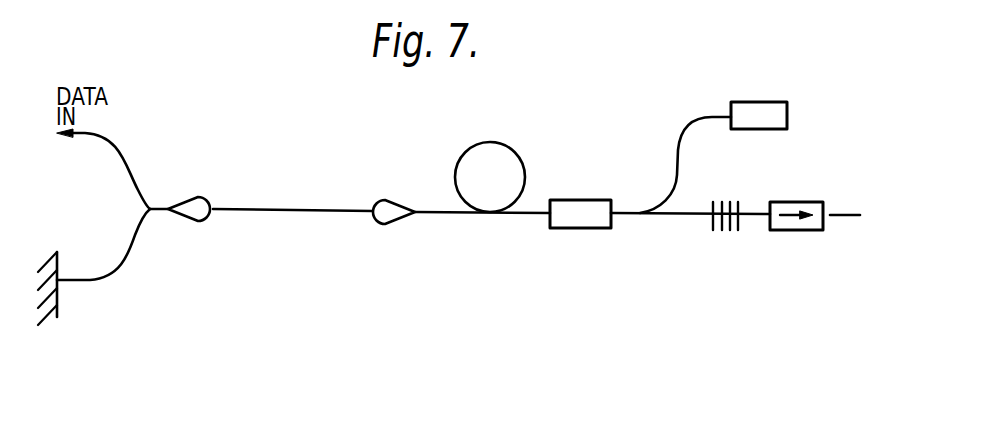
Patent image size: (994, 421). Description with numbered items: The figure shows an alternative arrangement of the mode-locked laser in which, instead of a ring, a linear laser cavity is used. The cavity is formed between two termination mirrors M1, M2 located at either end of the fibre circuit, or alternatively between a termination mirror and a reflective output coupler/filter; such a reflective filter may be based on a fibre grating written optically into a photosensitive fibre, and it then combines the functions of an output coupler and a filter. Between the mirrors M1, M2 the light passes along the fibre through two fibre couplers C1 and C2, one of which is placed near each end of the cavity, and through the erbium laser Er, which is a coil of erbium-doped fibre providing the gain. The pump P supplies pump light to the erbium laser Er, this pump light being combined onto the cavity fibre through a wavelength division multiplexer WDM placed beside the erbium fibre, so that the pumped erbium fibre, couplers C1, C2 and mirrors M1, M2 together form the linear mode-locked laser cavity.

The fibre coupler C1 is at (196, 204).
The fibre coupler C2 is at (385, 208).
The erbium laser Er is at (517, 150).
The wavelength division multiplexer WDM is at (580, 214).
The pump P is at (787, 118).
The termination mirror M1 is at (57, 298).
The termination mirror M2 is at (713, 230).